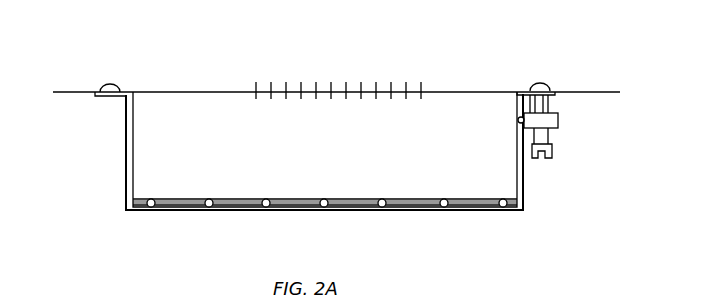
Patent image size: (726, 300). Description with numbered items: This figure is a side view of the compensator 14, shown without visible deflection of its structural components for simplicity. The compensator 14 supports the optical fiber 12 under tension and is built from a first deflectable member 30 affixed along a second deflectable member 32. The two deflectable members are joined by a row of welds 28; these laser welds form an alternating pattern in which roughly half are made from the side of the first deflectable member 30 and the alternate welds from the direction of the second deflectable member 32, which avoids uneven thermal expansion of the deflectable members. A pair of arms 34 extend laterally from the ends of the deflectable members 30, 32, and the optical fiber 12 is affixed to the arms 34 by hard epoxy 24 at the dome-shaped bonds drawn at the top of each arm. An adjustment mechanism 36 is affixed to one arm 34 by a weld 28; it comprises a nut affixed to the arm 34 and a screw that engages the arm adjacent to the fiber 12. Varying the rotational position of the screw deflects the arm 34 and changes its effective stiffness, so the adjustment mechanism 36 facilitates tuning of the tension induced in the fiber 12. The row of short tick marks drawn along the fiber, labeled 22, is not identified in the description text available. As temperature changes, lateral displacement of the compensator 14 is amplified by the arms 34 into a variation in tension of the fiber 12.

The optical fiber 12 is at (187, 92).
The compensator 14 is at (468, 67).
The ribs 22 is at (301, 82).
The hard epoxy 24 is at (112, 81).
The weld 28 is at (325, 201).
The first deflectable member 30 is at (313, 207).
The second deflectable member 32 is at (240, 197).
The arms 34 is at (125, 138).
The adjustment mechanism 36 is at (554, 137).